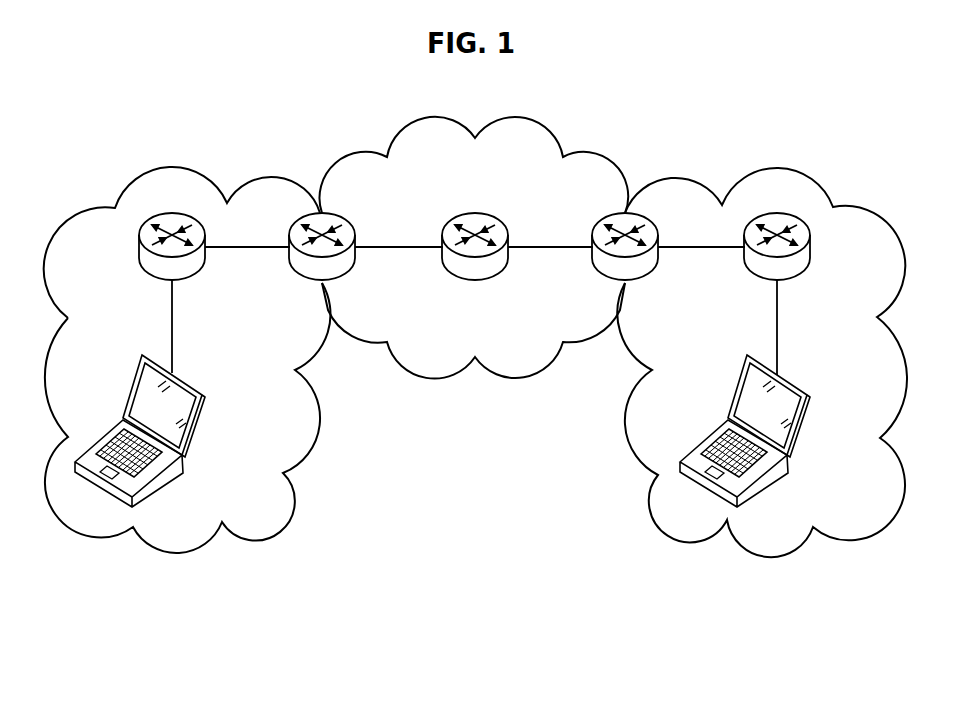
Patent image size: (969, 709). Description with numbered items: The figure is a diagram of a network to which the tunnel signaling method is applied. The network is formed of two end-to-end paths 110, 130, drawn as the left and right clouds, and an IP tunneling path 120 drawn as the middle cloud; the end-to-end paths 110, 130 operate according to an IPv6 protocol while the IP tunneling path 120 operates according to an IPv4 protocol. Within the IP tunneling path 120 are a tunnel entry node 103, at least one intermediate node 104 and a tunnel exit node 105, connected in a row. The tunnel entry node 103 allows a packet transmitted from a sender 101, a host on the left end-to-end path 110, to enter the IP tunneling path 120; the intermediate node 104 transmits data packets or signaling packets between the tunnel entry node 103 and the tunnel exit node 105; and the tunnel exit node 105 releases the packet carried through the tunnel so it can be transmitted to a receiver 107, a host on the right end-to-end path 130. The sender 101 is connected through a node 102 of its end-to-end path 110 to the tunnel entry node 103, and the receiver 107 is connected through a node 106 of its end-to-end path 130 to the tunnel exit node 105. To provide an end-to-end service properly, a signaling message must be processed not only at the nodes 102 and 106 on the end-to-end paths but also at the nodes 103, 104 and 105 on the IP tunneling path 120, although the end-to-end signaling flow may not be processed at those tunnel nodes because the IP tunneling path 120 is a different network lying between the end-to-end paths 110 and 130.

The sender 101 is at (192, 425).
The node on the end-to-end path 102 is at (192, 277).
The tunnel entry node 103 is at (345, 282).
The intermediate node 104 is at (473, 282).
The tunnel exit node 105 is at (647, 282).
The node on the end-to-end path 106 is at (800, 277).
The receiver 107 is at (800, 423).
The end-to-end path 110 is at (177, 553).
The IP tunneling path 120 is at (517, 378).
The end-to-end path 130 is at (772, 557).